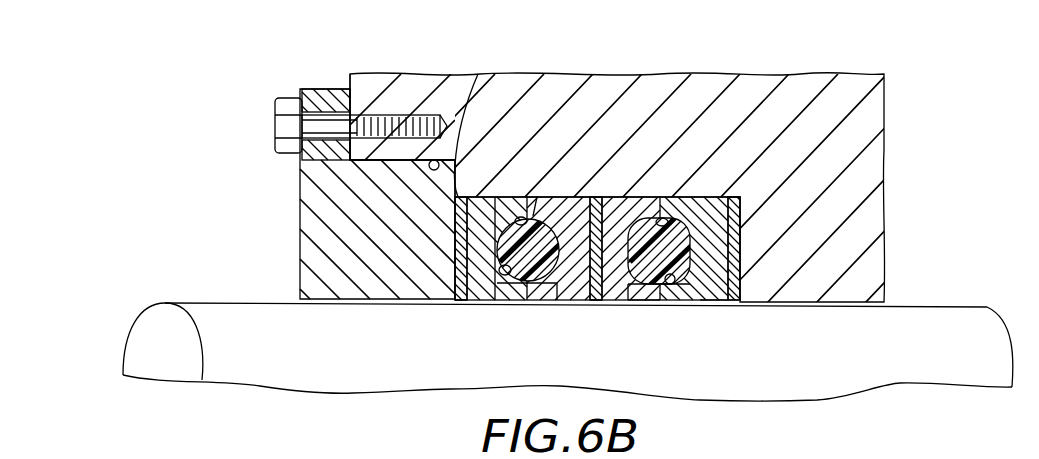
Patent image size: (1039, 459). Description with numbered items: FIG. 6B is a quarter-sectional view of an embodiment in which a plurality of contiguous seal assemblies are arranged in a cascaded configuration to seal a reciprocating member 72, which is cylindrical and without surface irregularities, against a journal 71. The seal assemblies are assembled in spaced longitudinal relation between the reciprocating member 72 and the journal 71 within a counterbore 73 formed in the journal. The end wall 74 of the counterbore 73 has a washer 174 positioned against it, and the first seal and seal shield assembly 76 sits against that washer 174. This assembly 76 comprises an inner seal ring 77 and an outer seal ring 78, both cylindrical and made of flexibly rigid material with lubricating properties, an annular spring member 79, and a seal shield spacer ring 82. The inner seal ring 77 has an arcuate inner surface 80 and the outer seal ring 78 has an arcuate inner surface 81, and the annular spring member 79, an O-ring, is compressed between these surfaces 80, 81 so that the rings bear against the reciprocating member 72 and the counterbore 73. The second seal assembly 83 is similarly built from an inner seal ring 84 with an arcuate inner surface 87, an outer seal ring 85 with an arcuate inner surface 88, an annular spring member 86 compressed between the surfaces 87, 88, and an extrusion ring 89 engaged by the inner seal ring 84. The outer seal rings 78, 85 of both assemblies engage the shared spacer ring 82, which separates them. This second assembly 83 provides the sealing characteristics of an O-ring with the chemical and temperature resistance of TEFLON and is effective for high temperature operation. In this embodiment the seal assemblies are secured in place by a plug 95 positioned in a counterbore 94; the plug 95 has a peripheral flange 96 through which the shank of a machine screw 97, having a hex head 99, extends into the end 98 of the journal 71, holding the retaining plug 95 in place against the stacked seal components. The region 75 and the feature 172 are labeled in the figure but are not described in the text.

The journal 71 is at (766, 62).
The reciprocating member 72 is at (920, 318).
The counterbore 73 is at (625, 197).
The end wall 74 is at (741, 258).
The seal cavity 75 is at (537, 197).
The seal and seal shield assembly 76 is at (639, 308).
The inner seal ring 77 is at (667, 297).
The outer seal ring 78 is at (686, 200).
The annular spring member 79 is at (741, 232).
The arcuate inner surface 80 is at (690, 300).
The arcuate inner surface 81 is at (668, 217).
The seal shield spacer ring 82 is at (592, 301).
The second seal assembly 83 is at (565, 306).
The inner seal ring 84 is at (527, 284).
The outer seal ring 85 is at (574, 200).
The annular spring member 86 is at (462, 237).
The arcuate inner surface 87 is at (500, 292).
The arcuate inner surface 88 is at (521, 217).
The extrusion ring 89 is at (459, 302).
The counterbore 94 is at (478, 74).
The plug 95 is at (380, 284).
The peripheral flange 96 is at (335, 98).
The machine screw 97 is at (308, 162).
The end 98 is at (415, 90).
The hex head 99 is at (275, 122).
The seal corner 172 is at (714, 302).
The washer 174 is at (736, 200).